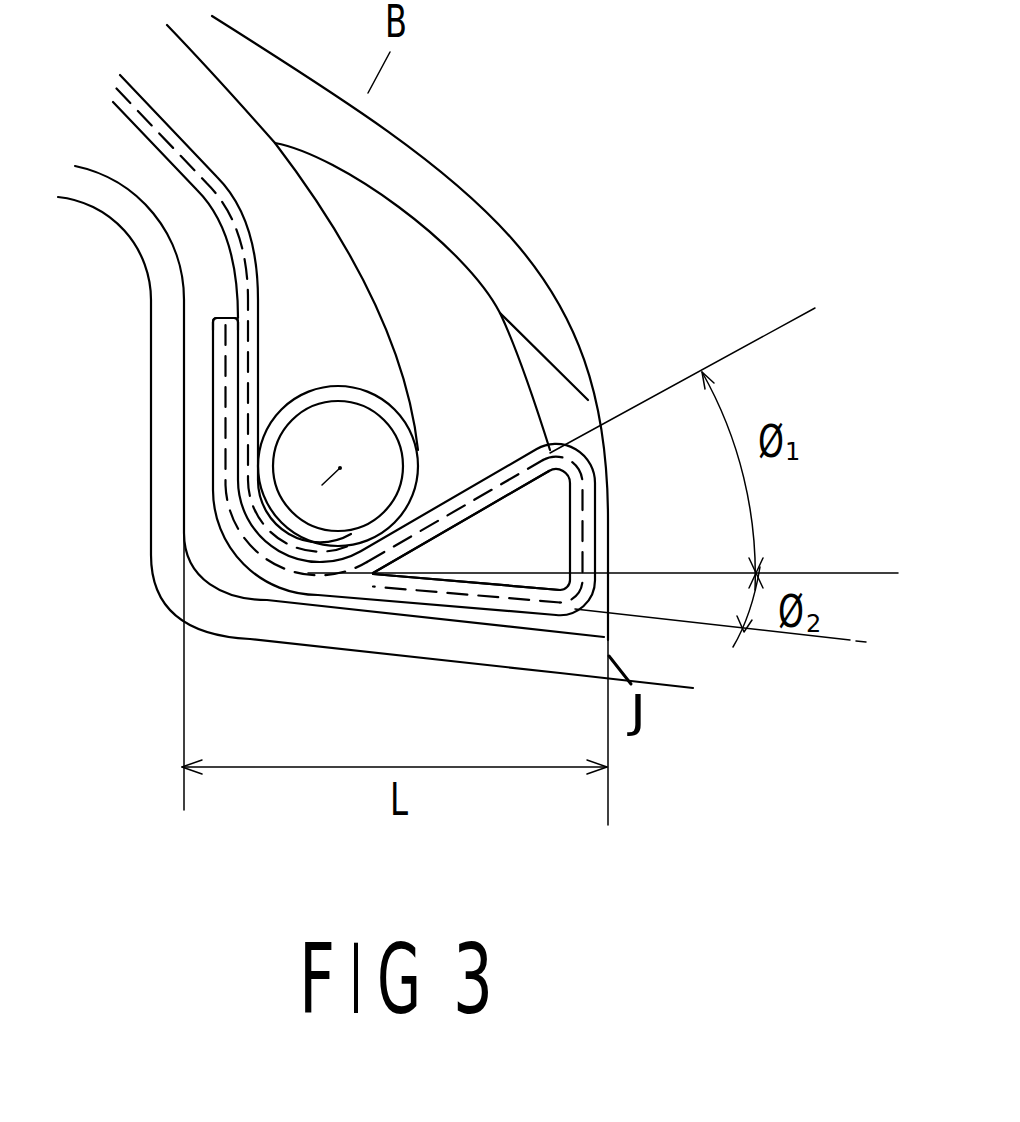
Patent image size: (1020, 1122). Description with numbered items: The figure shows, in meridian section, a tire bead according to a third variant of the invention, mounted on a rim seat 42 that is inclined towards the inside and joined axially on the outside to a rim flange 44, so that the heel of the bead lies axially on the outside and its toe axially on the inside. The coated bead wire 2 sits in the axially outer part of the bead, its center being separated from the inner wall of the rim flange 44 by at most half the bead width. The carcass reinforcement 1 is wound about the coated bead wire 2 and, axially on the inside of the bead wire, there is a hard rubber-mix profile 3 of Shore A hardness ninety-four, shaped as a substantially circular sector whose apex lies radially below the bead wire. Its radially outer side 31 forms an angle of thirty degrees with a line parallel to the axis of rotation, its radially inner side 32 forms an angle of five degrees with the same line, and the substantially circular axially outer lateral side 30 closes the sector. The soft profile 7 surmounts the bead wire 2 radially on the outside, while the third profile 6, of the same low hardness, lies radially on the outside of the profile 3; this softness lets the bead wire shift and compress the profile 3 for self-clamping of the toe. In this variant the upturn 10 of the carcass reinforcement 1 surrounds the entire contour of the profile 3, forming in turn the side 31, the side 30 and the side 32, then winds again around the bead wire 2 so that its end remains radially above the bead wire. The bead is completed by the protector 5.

The carcass reinforcement 1 is at (251, 316).
The coated bead wire 2 is at (347, 443).
The profile 3 is at (463, 563).
The protector 5 is at (257, 578).
The third profile 6 is at (430, 282).
The profile 7 is at (270, 197).
The upturn 10 is at (223, 417).
The axially outer lateral side 30 is at (573, 510).
The radially outer side 31 is at (460, 508).
The radially inner side 32 is at (500, 598).
The rim seat 42 is at (360, 628).
The rim flange 44 is at (170, 342).